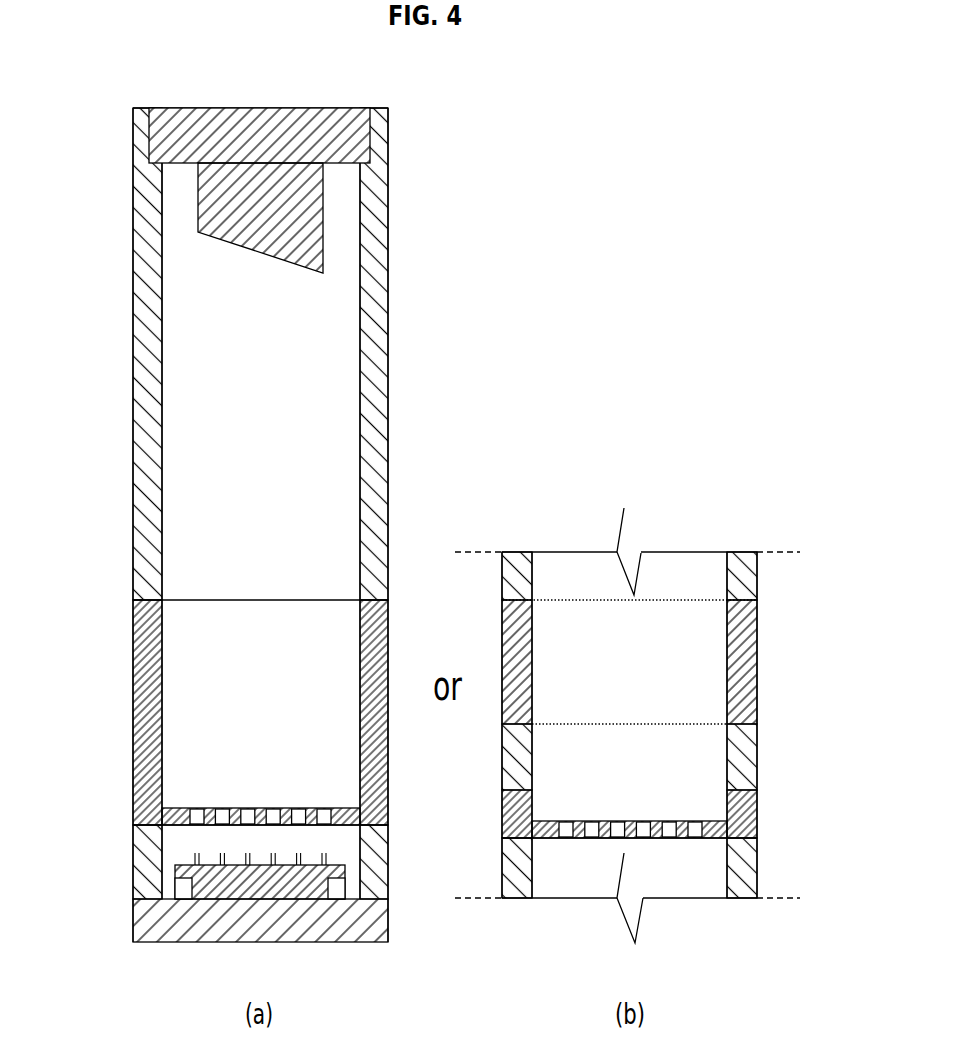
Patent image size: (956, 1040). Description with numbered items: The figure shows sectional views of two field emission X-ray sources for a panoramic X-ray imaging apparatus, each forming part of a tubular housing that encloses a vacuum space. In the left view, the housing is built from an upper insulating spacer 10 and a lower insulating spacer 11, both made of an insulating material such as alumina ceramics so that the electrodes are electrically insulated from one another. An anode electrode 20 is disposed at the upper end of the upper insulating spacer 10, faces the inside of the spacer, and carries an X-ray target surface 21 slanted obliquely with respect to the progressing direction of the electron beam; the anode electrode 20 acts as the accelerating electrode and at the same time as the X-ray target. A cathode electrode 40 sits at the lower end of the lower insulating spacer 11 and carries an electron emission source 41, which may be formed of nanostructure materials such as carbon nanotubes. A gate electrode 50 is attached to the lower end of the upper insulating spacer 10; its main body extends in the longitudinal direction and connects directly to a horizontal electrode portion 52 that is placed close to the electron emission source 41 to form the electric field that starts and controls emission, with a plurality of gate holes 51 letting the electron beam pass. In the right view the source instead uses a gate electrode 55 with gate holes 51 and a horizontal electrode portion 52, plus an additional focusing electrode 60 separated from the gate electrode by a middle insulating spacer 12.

The upper insulating spacer 10 is at (133, 383).
The lower insulating spacer 11 is at (150, 887).
The middle insulating spacer 12 is at (757, 755).
The anode electrode 20 is at (148, 141).
The X-ray target surface 21 is at (230, 243).
The cathode electrode 40 is at (150, 925).
The electron emission source 41 is at (194, 860).
The gate electrode 50 is at (133, 713).
The gate holes 51 is at (196, 826).
The horizontal electrode portion 52 is at (211, 808).
The gate electrode 55 is at (757, 815).
The focusing electrode 60 is at (757, 665).